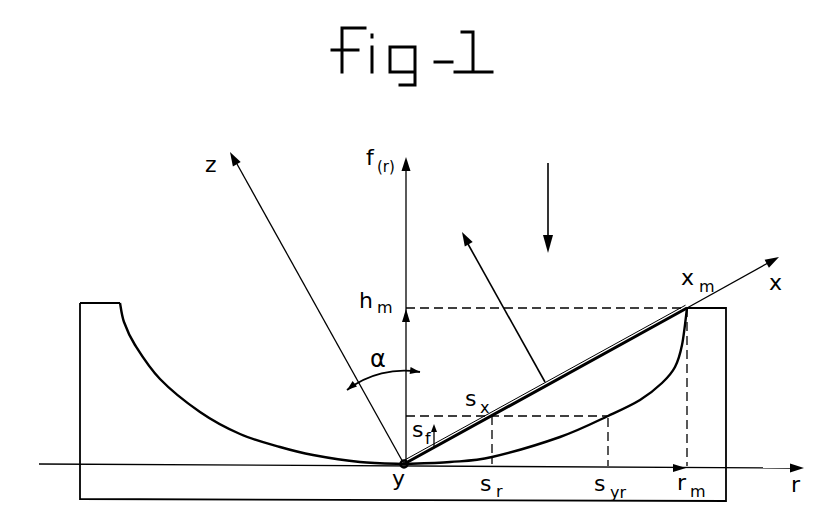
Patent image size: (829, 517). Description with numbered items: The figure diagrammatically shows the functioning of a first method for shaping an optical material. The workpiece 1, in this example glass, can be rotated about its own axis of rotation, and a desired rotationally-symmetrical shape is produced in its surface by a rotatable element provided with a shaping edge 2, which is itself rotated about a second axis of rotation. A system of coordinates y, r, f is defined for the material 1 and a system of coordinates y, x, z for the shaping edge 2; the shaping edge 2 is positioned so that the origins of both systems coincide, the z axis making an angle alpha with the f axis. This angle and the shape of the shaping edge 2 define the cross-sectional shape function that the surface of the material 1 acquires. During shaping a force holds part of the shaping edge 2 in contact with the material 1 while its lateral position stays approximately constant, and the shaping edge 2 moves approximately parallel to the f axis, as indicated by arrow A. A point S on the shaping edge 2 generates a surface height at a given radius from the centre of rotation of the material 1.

The workpiece 1 is at (96, 345).
The shaping edge 2 is at (606, 350).
The arrow A is at (560, 200).